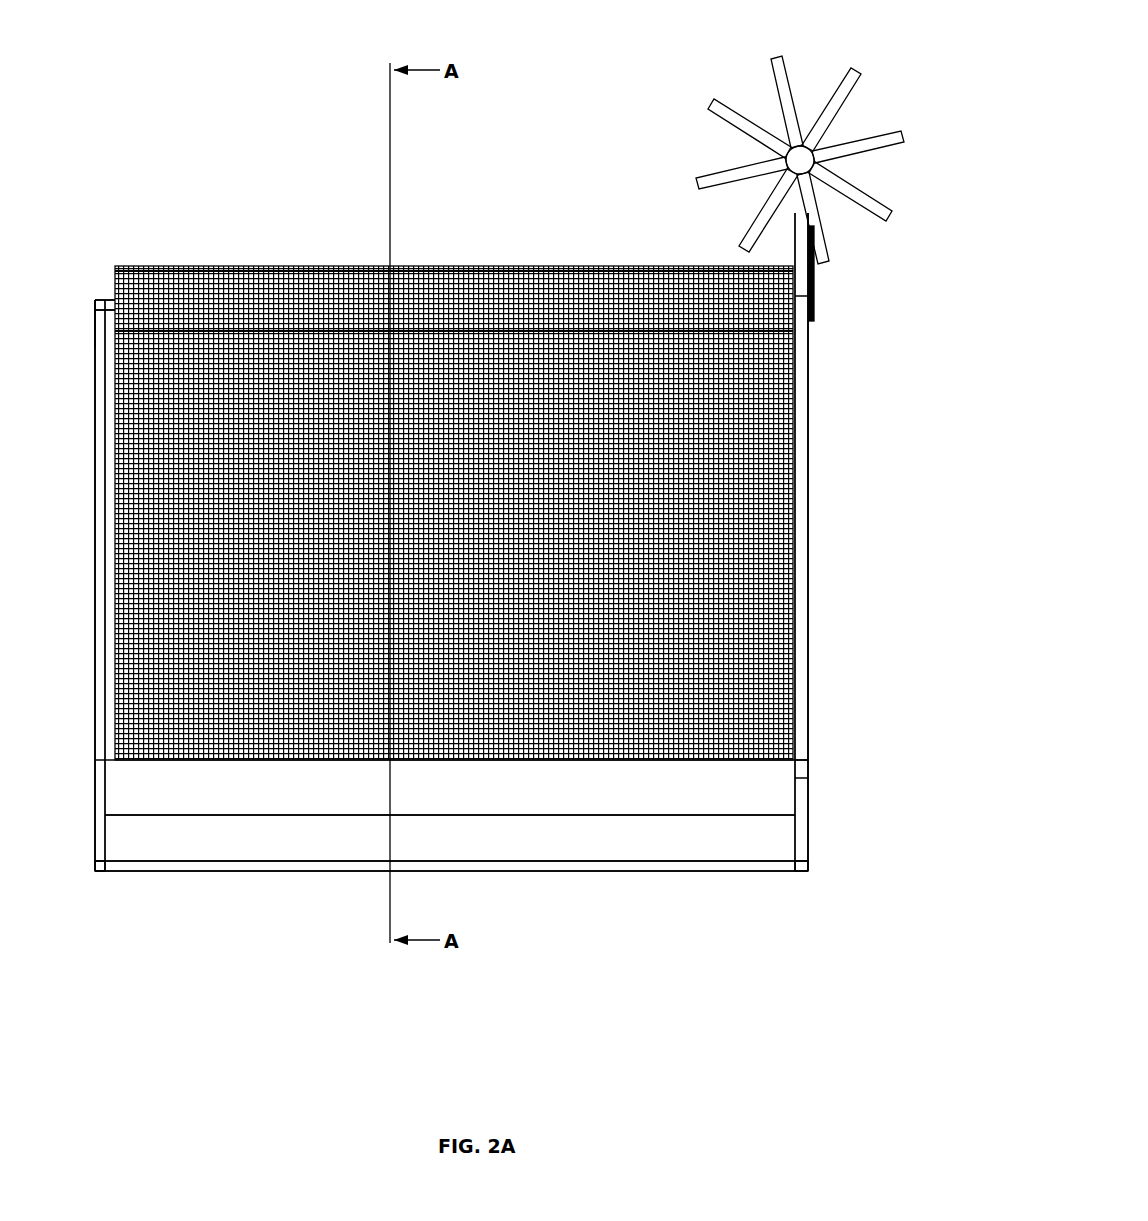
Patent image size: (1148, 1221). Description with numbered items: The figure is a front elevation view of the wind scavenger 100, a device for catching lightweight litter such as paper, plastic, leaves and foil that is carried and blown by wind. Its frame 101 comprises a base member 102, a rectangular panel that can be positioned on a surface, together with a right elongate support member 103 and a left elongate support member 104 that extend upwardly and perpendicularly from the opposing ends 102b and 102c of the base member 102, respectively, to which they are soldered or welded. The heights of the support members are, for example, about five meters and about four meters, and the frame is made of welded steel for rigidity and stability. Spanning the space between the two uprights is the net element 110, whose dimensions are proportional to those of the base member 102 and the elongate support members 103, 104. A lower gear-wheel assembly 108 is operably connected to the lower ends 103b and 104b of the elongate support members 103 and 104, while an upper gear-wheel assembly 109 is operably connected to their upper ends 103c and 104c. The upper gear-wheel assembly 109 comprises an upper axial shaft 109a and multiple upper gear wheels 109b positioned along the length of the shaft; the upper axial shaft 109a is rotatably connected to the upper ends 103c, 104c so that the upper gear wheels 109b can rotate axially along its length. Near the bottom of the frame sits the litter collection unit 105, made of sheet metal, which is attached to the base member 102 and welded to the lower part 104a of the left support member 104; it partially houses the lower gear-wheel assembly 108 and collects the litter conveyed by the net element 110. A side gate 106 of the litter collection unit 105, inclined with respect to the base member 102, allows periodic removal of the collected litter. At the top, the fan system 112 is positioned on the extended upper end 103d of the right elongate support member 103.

The wind scavenger 100 is at (500, 156).
The frame 101 is at (868, 822).
The base member 102 is at (609, 858).
The opposing end of the base member 102b is at (799, 864).
The opposing end of the base member 102c is at (98, 866).
The elongate support member 103 is at (796, 838).
The lower end of the elongate support member 103b is at (806, 744).
The upper end of the elongate support member 103c is at (799, 325).
The extended upper end 103d is at (797, 220).
The elongate support member 104 is at (102, 735).
The lower part of the support member 104a is at (104, 852).
The lower end of the elongate support member 104b is at (99, 790).
The upper end of the elongate support member 104c is at (99, 322).
The litter collection unit 105 is at (757, 833).
The side gate 106 is at (764, 781).
The lower gear-wheel assembly 108 is at (784, 745).
The upper gear-wheel assembly 109 is at (857, 432).
The upper axial shaft 109a is at (787, 305).
The upper gear wheels 109b is at (734, 327).
The net element 110 is at (777, 553).
The fan system 112 is at (752, 92).